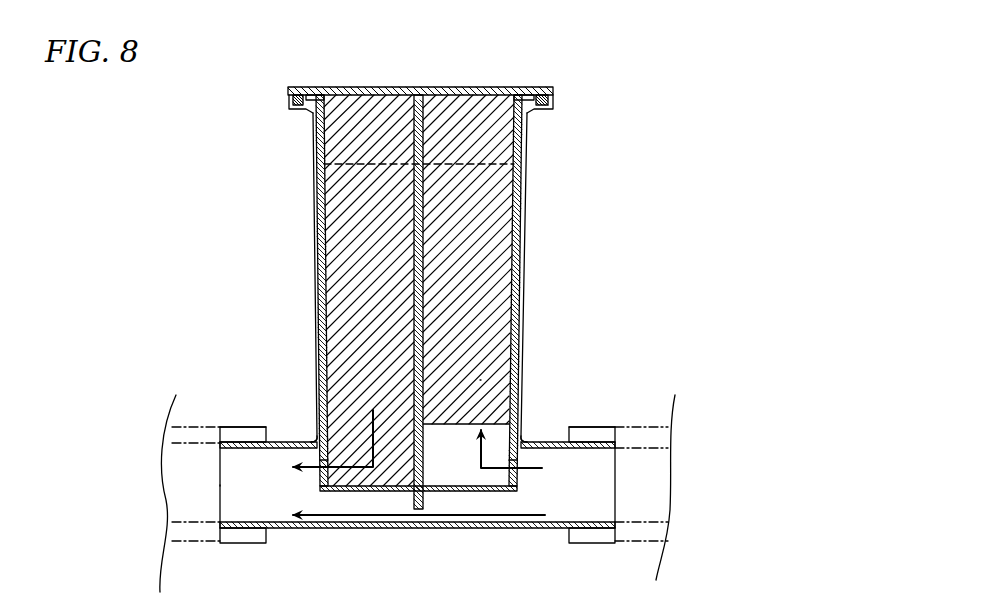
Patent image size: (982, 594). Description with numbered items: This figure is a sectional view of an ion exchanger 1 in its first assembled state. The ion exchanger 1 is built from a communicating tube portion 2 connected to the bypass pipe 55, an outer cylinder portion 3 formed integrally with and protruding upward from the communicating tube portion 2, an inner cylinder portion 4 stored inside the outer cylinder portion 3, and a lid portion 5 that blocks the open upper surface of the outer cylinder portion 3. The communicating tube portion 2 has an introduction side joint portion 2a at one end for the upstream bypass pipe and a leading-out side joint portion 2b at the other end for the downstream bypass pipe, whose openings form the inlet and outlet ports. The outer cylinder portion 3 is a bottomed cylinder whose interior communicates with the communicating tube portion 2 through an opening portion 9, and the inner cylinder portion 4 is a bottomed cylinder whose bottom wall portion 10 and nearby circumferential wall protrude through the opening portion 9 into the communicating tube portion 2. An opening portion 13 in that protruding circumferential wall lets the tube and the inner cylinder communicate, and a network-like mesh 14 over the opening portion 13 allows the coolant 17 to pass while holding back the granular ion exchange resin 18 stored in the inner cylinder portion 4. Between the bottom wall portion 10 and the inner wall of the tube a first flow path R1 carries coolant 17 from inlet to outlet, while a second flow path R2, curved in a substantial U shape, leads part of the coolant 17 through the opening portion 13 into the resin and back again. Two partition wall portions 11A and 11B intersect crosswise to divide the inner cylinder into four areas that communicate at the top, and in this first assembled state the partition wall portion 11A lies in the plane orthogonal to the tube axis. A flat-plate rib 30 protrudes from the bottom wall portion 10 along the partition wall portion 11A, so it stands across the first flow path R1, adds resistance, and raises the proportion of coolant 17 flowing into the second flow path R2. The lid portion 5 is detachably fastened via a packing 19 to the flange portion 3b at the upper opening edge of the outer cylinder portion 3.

The ion exchanger 1 is at (612, 84).
The communicating tube portion 2 is at (533, 529).
The introduction side joint portion 2a is at (590, 540).
The leading-out side joint portion 2b is at (246, 531).
The outer cylinder portion 3 is at (525, 292).
The flange portion 3b is at (300, 112).
The inner cylinder portion 4 is at (523, 197).
The lid portion 5 is at (465, 88).
The opening portion 9 is at (520, 455).
The bottom wall portion 10 is at (377, 484).
The partition wall portion 11A is at (423, 253).
The partition wall portion 11B is at (468, 163).
The opening portion 13 is at (316, 440).
The mesh 14 is at (322, 478).
The coolant 17 is at (258, 500).
The ion exchange resin 18 is at (390, 233).
The packing 19 is at (296, 100).
The rib 30 is at (413, 507).
The bypass pipe 55 is at (222, 427).
The first flow path R1 is at (492, 517).
The second flow path R2 is at (506, 368).